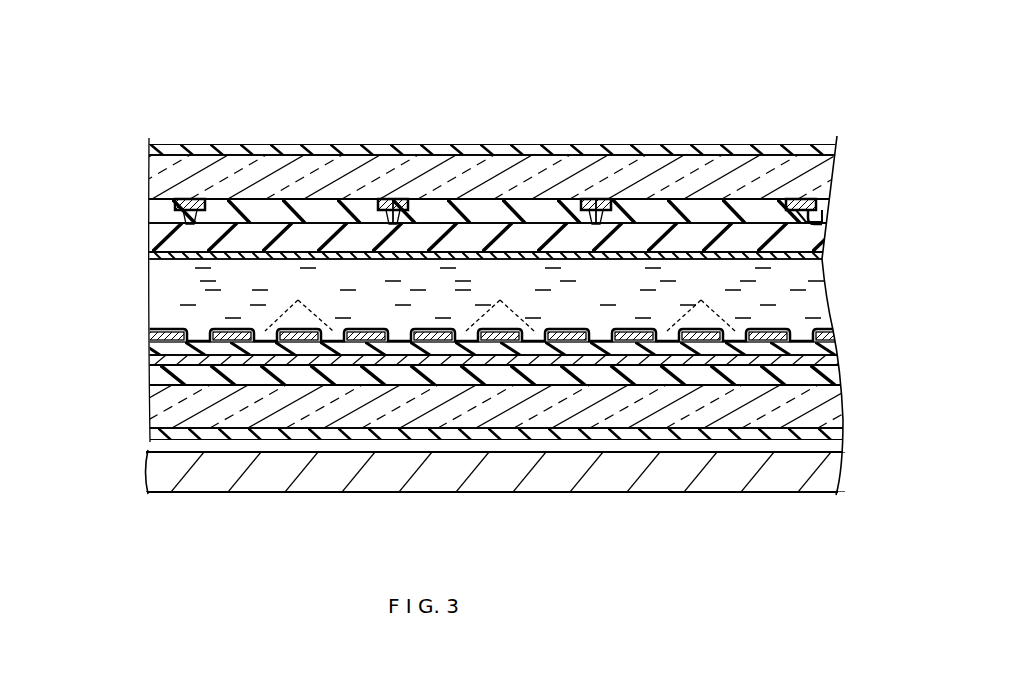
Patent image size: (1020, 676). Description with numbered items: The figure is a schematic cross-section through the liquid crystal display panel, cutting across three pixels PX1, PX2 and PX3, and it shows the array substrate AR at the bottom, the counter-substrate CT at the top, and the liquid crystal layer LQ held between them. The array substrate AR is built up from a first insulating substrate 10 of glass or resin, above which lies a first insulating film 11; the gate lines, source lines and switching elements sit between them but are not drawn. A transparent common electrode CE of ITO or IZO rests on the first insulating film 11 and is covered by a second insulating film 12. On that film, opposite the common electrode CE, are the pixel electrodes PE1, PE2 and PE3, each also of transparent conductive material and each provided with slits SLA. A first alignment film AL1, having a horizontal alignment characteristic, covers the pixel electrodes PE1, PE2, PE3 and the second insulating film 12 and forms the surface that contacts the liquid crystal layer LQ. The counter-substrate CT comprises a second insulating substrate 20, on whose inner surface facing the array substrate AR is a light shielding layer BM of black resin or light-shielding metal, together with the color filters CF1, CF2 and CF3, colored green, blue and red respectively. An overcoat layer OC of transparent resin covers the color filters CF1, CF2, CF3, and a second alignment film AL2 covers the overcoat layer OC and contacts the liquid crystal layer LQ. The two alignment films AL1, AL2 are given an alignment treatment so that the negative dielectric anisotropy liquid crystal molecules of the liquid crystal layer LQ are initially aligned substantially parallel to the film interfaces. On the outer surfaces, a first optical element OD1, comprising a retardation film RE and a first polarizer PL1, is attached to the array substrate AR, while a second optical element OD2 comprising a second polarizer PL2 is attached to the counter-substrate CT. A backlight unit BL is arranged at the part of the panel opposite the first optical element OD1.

The second optical element OD2 is at (152, 150).
The second polarizer PL2 is at (444, 151).
The second insulating substrate 20 is at (160, 195).
The light shielding layer BM is at (186, 199).
The color filter CF1 is at (287, 212).
The color filter CF2 is at (487, 212).
The color filter CF3 is at (703, 212).
The pixel PX1 is at (344, 122).
The pixel PX2 is at (548, 122).
The pixel PX3 is at (756, 122).
The counter-substrate CT is at (832, 211).
The overcoat layer OC is at (163, 244).
The second alignment film AL2 is at (150, 256).
The liquid crystal layer LQ is at (812, 290).
The slits SLA is at (500, 302).
The first alignment film AL1 is at (150, 327).
The second insulating film 12 is at (147, 350).
The common electrode CE is at (160, 361).
The first insulating film 11 is at (150, 375).
The first insulating substrate 10 is at (162, 415).
The first optical element OD1 is at (153, 433).
The first polarizer PL1 is at (433, 455).
The retardation film RE is at (495, 434).
The backlight unit BL is at (152, 472).
The pixel electrode PE1 is at (296, 342).
The pixel electrode PE2 is at (500, 342).
The pixel electrode PE3 is at (703, 342).
The array substrate AR is at (856, 383).